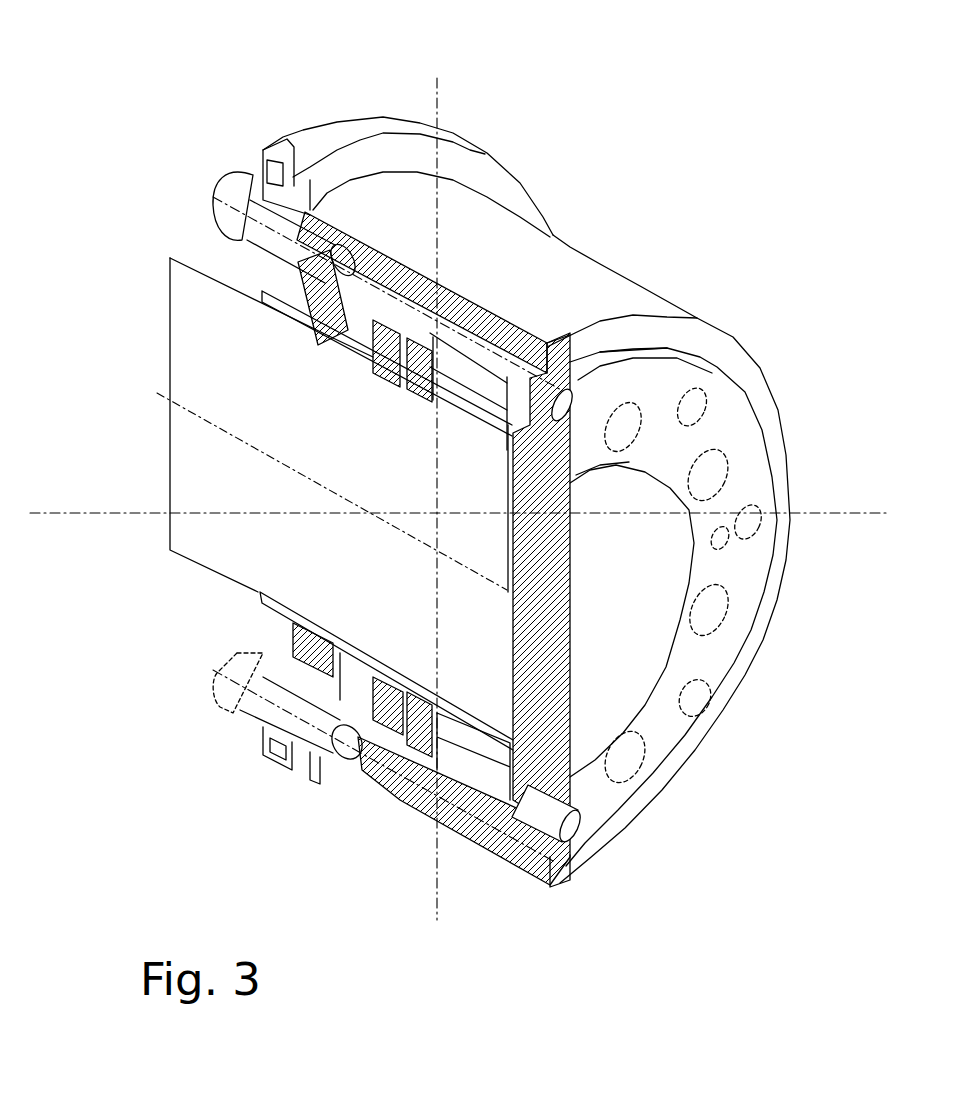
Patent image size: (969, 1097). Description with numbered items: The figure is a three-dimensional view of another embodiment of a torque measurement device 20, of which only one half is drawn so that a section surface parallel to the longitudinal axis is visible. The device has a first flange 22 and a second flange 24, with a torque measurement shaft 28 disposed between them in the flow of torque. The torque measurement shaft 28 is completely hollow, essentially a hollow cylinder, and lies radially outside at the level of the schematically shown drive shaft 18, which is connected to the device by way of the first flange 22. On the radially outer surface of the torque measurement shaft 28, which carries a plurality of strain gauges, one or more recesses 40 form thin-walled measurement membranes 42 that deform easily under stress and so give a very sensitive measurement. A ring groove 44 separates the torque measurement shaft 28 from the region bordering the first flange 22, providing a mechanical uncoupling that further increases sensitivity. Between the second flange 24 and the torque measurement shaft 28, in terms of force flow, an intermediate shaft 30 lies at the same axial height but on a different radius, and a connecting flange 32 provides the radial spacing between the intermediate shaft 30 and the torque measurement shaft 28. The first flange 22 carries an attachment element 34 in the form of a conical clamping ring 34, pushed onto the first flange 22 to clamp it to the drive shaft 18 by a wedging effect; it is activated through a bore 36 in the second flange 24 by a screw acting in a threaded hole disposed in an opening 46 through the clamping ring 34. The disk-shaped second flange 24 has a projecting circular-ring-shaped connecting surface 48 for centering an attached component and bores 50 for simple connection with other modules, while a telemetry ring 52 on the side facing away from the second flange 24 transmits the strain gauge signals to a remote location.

The drive shaft 18 is at (217, 257).
The torque measurement device 20 is at (325, 98).
The first flange 22 is at (505, 420).
The second flange 24 is at (676, 824).
The torque measurement shaft 28 is at (345, 354).
The intermediate shaft 30 is at (440, 287).
The connecting flange 32 is at (283, 313).
The attachment element (conically configured clamping ring) 34 is at (467, 377).
The bore (activation opening) 36 is at (612, 370).
The recesses 40 is at (397, 347).
The measurement membranes 42 is at (347, 342).
The ring groove 44 is at (415, 353).
The opening 46 is at (550, 348).
The connecting surface 48 is at (710, 430).
The bores 50 is at (717, 610).
The telemetry ring 52 is at (283, 150).